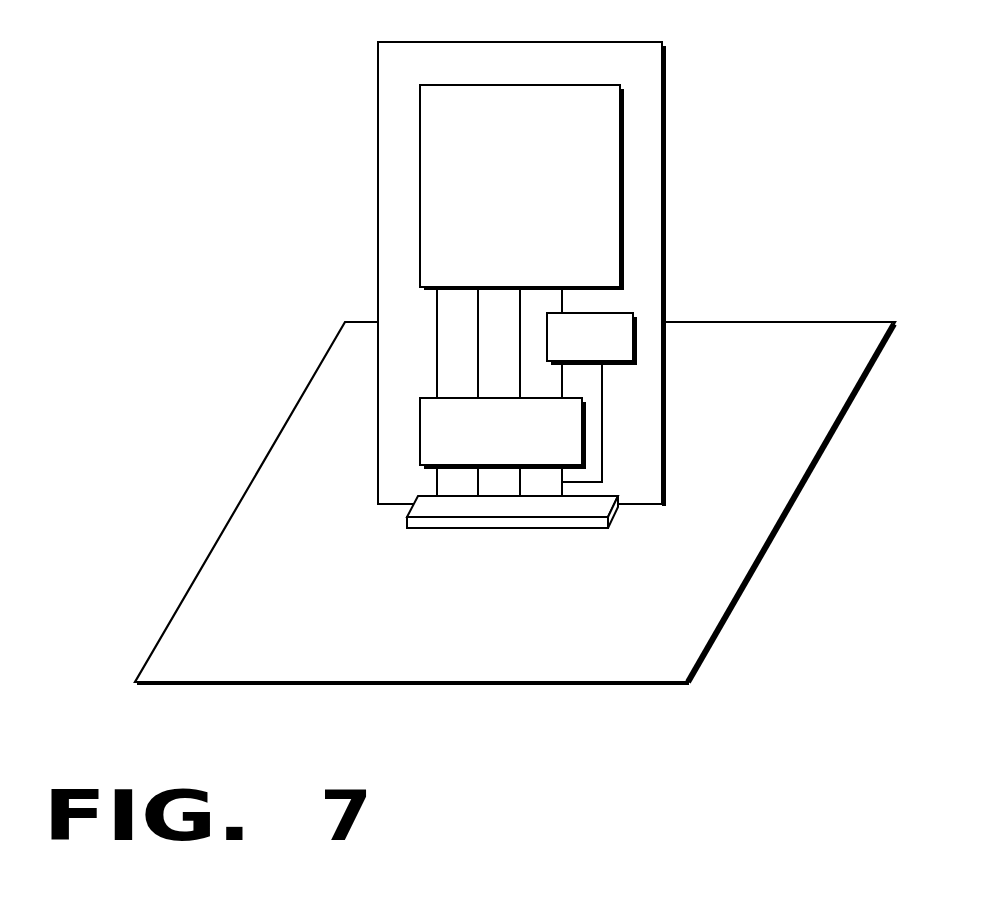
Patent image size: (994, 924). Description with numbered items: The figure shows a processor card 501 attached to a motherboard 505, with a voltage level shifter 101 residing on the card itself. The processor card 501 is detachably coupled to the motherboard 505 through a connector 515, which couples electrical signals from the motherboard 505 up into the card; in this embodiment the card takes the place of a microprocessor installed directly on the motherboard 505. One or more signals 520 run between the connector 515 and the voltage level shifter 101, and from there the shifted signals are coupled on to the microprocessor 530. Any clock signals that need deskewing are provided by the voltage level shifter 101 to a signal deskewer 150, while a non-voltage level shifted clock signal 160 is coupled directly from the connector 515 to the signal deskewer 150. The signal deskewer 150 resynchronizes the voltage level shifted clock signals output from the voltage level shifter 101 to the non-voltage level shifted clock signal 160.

The motherboard 505 is at (798, 343).
The processor card 501 is at (659, 71).
The microprocessor 530 is at (612, 284).
The signal deskewer 150 is at (629, 356).
The voltage level shifter 101 is at (576, 460).
The non-voltage level shifted clock signal 160 is at (604, 394).
The signals 520 is at (424, 483).
The connector 515 is at (533, 526).